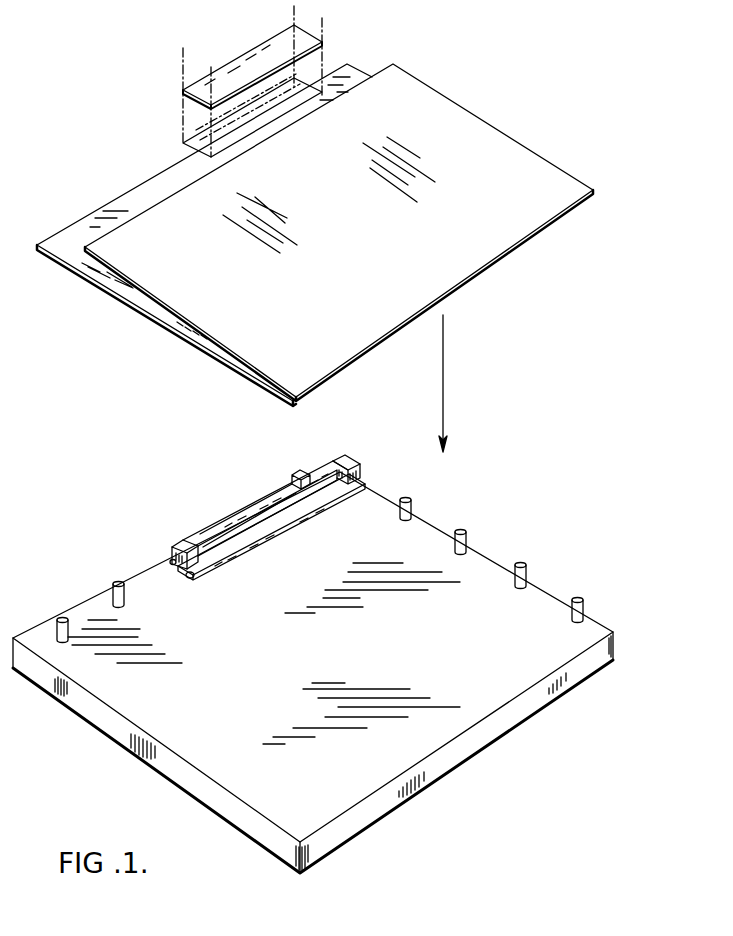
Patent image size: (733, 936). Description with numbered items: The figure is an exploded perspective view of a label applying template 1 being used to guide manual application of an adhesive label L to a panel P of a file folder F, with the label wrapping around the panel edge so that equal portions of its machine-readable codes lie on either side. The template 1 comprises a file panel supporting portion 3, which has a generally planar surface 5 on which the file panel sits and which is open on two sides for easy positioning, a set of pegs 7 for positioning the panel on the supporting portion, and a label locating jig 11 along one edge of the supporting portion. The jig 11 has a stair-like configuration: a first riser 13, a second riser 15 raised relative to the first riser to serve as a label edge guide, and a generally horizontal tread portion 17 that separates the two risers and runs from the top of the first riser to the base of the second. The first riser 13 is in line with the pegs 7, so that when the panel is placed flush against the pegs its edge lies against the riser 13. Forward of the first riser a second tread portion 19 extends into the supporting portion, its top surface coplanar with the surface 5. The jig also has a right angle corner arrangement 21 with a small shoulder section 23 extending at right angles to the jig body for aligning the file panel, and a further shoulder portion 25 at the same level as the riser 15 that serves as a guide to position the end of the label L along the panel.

The template 1 is at (313, 672).
The file panel supporting portion 3 is at (590, 628).
The planar surface 5 is at (510, 688).
The pegs 7 is at (110, 578).
The label locating jig 11 is at (289, 528).
The first riser 13 is at (190, 575).
The second riser 15 is at (195, 532).
The tread portion 17 is at (223, 528).
The second tread portion 19 is at (267, 528).
The right angle corner arrangement 21 is at (355, 465).
The shoulder section 23 is at (362, 483).
The shoulder portion 25 is at (302, 473).
The adhesive label L is at (235, 63).
The file folder F is at (470, 120).
The panel P is at (77, 232).